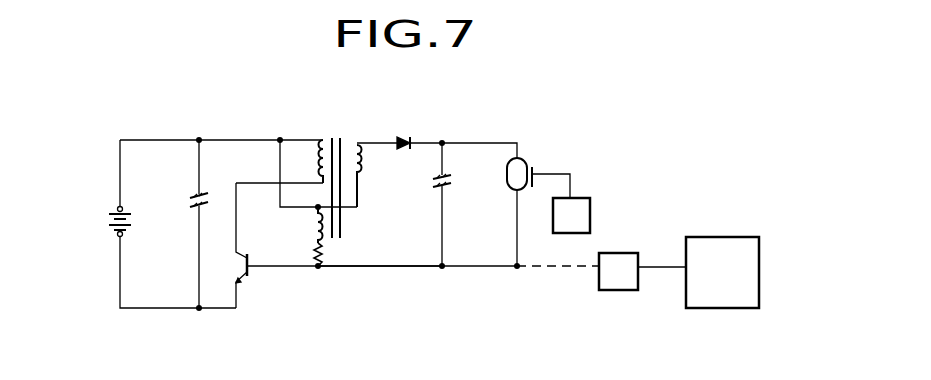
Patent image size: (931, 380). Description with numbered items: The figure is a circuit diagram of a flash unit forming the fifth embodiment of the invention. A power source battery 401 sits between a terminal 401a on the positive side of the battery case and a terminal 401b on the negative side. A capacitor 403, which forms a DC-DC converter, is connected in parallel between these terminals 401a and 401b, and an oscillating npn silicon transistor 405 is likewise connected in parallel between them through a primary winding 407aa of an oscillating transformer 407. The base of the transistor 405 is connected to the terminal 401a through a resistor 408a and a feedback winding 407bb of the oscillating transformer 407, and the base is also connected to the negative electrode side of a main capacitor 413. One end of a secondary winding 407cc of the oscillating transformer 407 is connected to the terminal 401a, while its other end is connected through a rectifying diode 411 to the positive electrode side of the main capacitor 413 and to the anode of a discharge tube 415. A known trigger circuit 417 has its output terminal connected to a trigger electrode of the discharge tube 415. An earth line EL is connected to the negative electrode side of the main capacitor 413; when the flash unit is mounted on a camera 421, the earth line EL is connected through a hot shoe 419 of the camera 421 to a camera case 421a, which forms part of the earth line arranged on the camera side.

The power source battery 401 is at (114, 219).
The terminal on the positive side of the battery case 401a is at (124, 208).
The terminal on the negative side of the battery case 401b is at (118, 240).
The capacitor 403 is at (188, 212).
The oscillating npn silicon transistor 405 is at (244, 259).
The oscillating transformer 407 is at (330, 159).
The primary winding 407aa is at (322, 138).
The feedback winding 407bb is at (316, 226).
The secondary winding 407cc is at (364, 168).
The resistor 408a is at (322, 253).
The rectifying diode 411 is at (404, 136).
The main capacitor 413 is at (446, 189).
The discharge tube 415 is at (507, 168).
The trigger circuit 417 is at (579, 197).
The hot shoe 419 is at (622, 252).
The camera 421 is at (733, 285).
The camera case 421a is at (726, 309).
The earth line EL is at (415, 267).